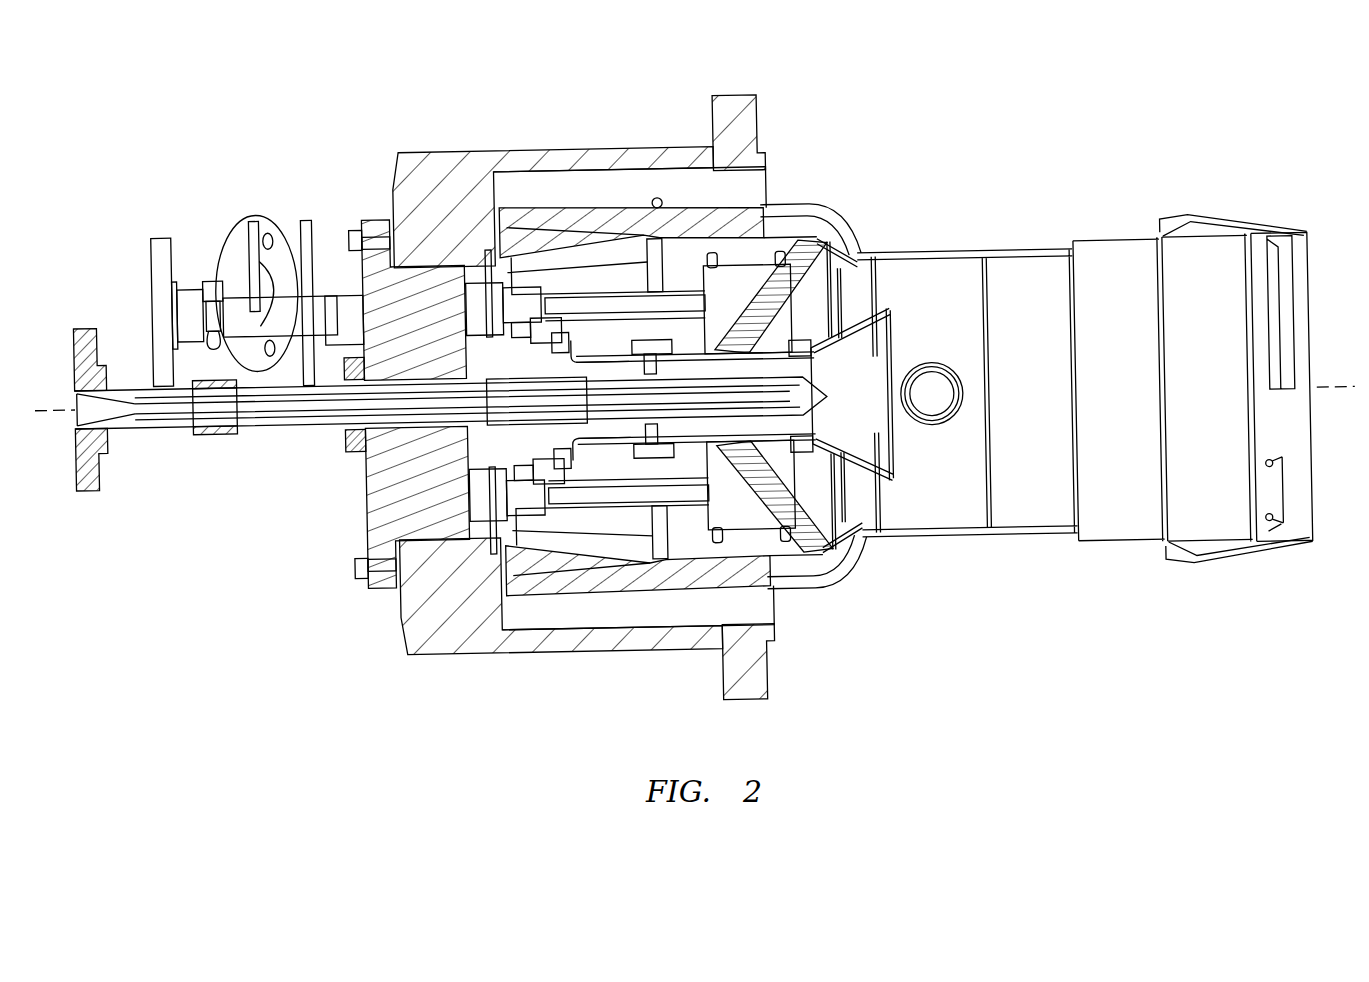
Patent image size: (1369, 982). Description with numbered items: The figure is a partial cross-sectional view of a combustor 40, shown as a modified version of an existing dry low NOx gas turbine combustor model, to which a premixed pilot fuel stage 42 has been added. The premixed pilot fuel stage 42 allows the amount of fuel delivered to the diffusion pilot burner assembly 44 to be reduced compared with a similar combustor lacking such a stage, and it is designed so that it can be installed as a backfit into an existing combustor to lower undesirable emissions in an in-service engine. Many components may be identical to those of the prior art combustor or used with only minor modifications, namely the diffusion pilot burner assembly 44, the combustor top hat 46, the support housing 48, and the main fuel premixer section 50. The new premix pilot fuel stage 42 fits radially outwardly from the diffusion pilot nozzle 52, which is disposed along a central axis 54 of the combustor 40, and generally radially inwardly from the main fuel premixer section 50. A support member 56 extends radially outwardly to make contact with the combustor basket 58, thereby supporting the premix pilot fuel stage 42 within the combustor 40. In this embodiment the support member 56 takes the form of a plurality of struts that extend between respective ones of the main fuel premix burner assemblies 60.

The combustor 40 is at (1052, 133).
The premixed pilot fuel stage 42 is at (633, 343).
The diffusion pilot burner assembly 44 is at (300, 428).
The combustor top hat 46 is at (665, 152).
The support housing 48 is at (378, 218).
The main fuel premixer section 50 is at (747, 262).
The diffusion pilot nozzle 52 is at (833, 373).
The central axis 54 is at (1337, 390).
The support member 56 is at (823, 552).
The combustor basket 58 is at (723, 573).
The main fuel premix burner assemblies 60 is at (749, 300).